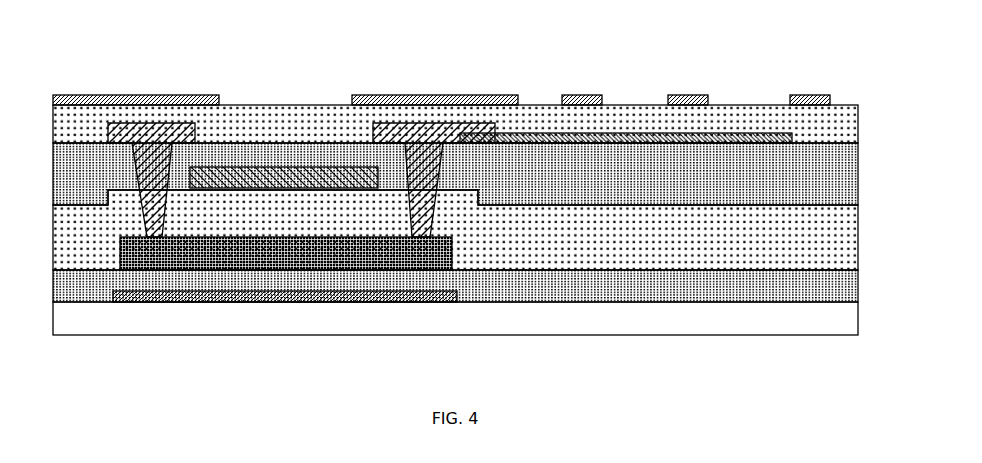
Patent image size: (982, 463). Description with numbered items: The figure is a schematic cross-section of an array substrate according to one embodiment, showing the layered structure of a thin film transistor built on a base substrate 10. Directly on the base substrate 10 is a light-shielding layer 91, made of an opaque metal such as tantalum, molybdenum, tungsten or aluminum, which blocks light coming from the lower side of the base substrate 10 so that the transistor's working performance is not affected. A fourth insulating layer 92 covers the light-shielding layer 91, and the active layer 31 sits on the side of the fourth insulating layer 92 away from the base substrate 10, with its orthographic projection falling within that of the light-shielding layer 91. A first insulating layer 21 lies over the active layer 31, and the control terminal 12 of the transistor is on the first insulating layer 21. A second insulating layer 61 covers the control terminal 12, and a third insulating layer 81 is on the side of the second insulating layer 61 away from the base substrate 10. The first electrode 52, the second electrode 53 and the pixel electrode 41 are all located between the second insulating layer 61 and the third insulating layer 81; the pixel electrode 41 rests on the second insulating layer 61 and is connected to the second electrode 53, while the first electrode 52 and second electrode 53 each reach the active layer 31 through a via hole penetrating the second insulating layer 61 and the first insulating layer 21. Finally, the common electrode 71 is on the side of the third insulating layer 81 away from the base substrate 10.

The base substrate 10 is at (260, 322).
The light-shielding layer 91 is at (165, 302).
The fourth insulating layer 92 is at (222, 282).
The active layer 31 is at (325, 255).
The first insulating layer 21 is at (523, 248).
The control terminal 12 is at (241, 176).
The second insulating layer 61 is at (628, 177).
The pixel electrode 41 is at (546, 133).
The first electrode 52 is at (149, 128).
The second electrode 53 is at (424, 128).
The third insulating layer 81 is at (633, 123).
The common electrode 71 is at (482, 101).